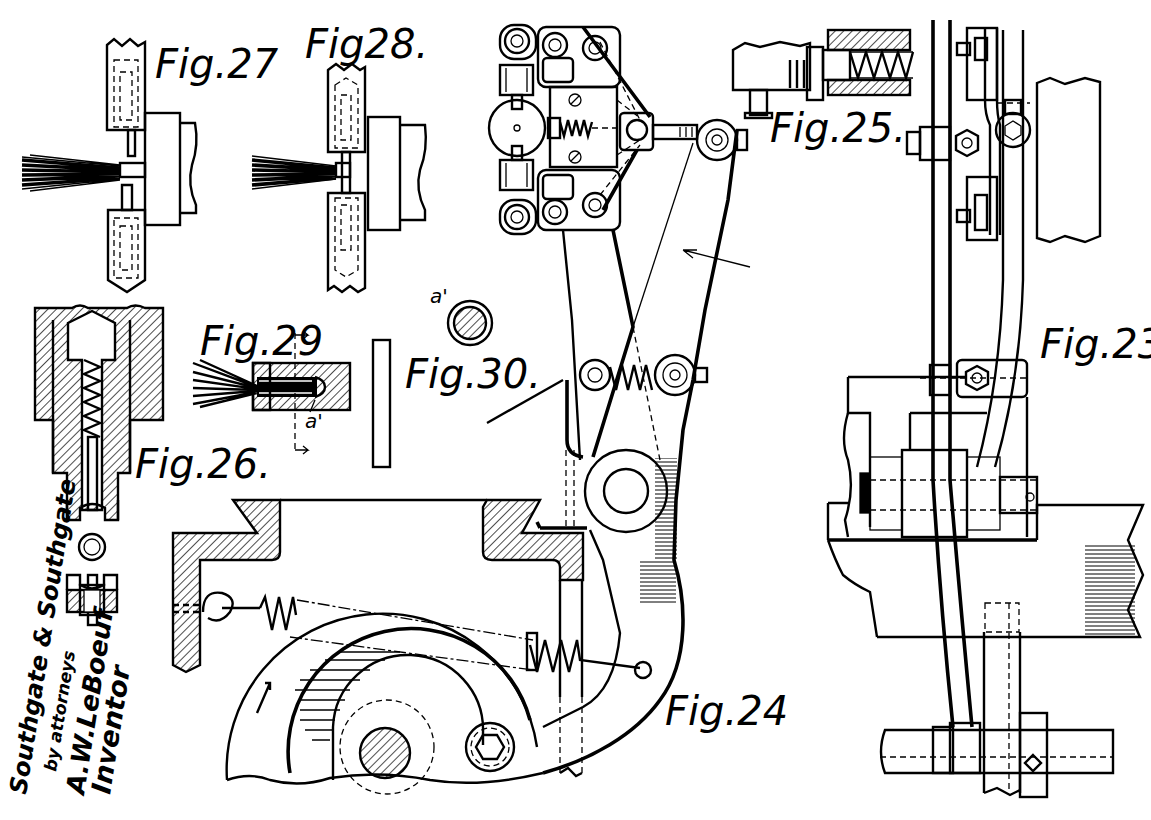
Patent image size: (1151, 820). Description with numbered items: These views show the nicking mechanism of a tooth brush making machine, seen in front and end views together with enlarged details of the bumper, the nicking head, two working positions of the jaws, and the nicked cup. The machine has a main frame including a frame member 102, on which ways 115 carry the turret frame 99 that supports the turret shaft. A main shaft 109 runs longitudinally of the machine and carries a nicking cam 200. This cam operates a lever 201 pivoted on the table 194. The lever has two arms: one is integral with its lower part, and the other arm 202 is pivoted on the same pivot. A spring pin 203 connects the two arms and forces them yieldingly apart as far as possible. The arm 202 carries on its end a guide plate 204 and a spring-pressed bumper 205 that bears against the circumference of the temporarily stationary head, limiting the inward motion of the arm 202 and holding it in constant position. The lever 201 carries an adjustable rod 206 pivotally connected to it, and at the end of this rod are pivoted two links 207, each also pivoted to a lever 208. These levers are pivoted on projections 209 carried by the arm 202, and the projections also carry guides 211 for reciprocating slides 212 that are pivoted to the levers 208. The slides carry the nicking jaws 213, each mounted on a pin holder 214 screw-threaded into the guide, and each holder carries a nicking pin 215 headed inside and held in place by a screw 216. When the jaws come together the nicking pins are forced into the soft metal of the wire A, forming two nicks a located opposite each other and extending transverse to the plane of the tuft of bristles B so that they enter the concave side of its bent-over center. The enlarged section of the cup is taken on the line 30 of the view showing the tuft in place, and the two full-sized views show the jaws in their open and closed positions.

In FIG. 23, the turret frame 99 is at (1068, 174).
In FIG. 24, the frame member 102 is at (560, 594).
In FIG. 23, the frame member 102 is at (875, 615).
In FIG. 24, the main shaft 109 is at (412, 712).
In FIG. 23, the main shaft 109 is at (1090, 725).
In FIG. 24, the ways 115 is at (280, 520).
In FIG. 23, the ways 115 is at (830, 518).
In FIG. 24, the table 194 is at (473, 423).
In FIG. 23, the table 194 is at (848, 396).
In FIG. 24, the nicking cam 200 is at (418, 612).
In FIG. 23, the nicking cam 200 is at (1020, 660).
In FIG. 24, the lever 201 is at (696, 326).
In FIG. 23, the lever 201 is at (933, 326).
In FIG. 25, the arm 202 is at (910, 38).
In FIG. 24, the arm 202 is at (574, 322).
In FIG. 23, the arm 202 is at (1003, 312).
In FIG. 24, the spring pin 203 is at (615, 365).
In FIG. 23, the spring pin 203 is at (990, 390).
In FIG. 24, the guide plate 204 is at (588, 100).
In FIG. 23, the guide plate 204 is at (1000, 118).
In FIG. 25, the bumper 205 is at (840, 48).
In FIG. 24, the bumper 205 is at (560, 120).
In FIG. 24, the adjustable rod 206 is at (672, 130).
In FIG. 23, the adjustable rod 206 is at (930, 160).
In FIG. 24, the links 207 is at (612, 60).
In FIG. 23, the links 207 is at (1000, 62).
In FIG. 24, the levers 208 is at (600, 40).
In FIG. 23, the levers 208 is at (1000, 35).
In FIG. 24, the projections 209 is at (540, 242).
In FIG. 23, the projections 209 is at (970, 70).
In FIG. 24, the guides 211 is at (500, 75).
In FIG. 26, the guides 211 is at (150, 310).
In FIG. 27, the reciprocating slides 212 is at (107, 50).
In FIG. 28, the reciprocating slides 212 is at (328, 90).
In FIG. 24, the reciprocating slides 212 is at (512, 100).
In FIG. 26, the reciprocating slides 212 is at (97, 303).
In FIG. 27, the nicking jaws 213 is at (122, 190).
In FIG. 24, the nicking jaws 213 is at (500, 118).
In FIG. 26, the nicking jaws 213 is at (118, 518).
In FIG. 26, the pin holder 214 is at (67, 511).
In FIG. 27, the nicking pin 215 is at (128, 150).
In FIG. 28, the nicking pin 215 is at (342, 150).
In FIG. 26, the nicking pin 215 is at (105, 625).
In FIG. 27, the screw 216 is at (114, 72).
In FIG. 28, the screw 216 is at (335, 105).
In FIG. 26, the screw 216 is at (92, 362).
In FIG. 29, the section line 30 is at (306, 395).
In FIG. 27, the wire A is at (143, 172).
In FIG. 25, the wire A is at (760, 90).
In FIG. 26, the wire A is at (79, 550).
In FIG. 29, the wire A is at (360, 362).
In FIG. 30, the wire A is at (482, 302).
In FIG. 27, the tuft of bristles B is at (71, 180).
In FIG. 28, the tuft of bristles B is at (300, 180).
In FIG. 29, the tuft of bristles B is at (238, 396).
In FIG. 30, the tuft of bristles B is at (448, 325).
In FIG. 29, the ferrule a is at (275, 404).